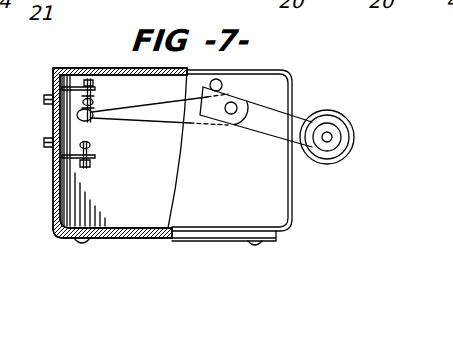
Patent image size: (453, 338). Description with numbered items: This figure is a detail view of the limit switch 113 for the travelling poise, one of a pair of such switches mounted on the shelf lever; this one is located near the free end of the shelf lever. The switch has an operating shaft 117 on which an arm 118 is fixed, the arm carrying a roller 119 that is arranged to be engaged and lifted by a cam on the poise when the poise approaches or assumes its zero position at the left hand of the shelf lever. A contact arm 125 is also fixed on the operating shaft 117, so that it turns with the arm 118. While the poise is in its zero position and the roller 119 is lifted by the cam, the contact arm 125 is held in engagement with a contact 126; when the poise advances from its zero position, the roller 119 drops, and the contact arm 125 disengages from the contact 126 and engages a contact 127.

The limit switch 113 is at (180, 245).
The operating shaft 117 is at (230, 114).
The arm 118 is at (278, 118).
The roller 119 is at (348, 137).
The contact arm 125 is at (160, 113).
The contact 126 is at (92, 145).
The contact 127 is at (98, 101).